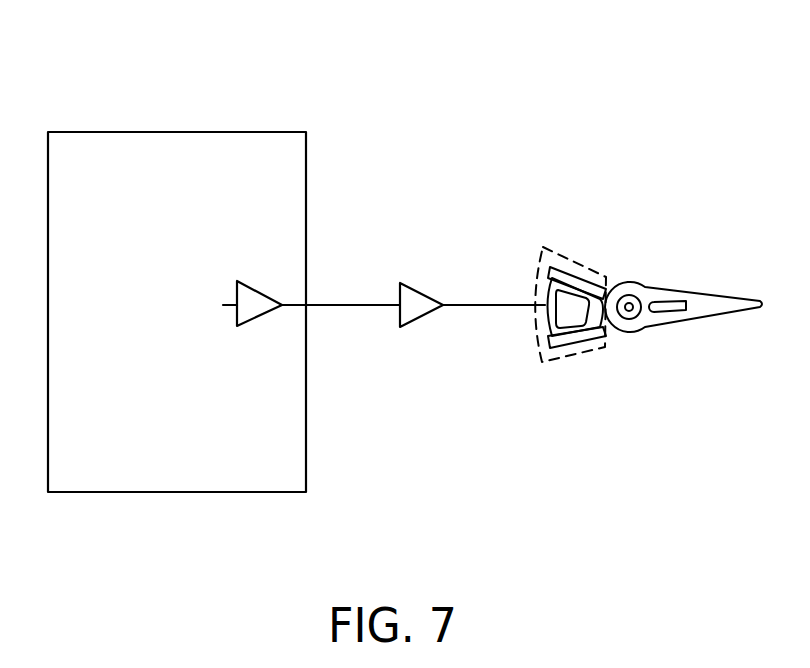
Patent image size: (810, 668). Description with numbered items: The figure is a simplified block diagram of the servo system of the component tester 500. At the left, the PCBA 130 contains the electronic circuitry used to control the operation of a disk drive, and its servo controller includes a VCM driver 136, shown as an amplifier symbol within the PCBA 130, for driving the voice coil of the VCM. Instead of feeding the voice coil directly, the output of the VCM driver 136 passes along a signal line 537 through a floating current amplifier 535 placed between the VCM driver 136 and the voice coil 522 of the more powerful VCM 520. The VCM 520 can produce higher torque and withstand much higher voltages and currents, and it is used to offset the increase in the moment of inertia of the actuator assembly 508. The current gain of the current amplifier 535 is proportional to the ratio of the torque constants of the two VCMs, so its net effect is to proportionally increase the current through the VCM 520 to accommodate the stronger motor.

The component tester 500 is at (457, 80).
The PCBA 130 is at (197, 132).
The VCM driver 136 is at (265, 292).
The current amplifier 535 is at (417, 288).
The signal line 537 is at (473, 306).
The VCM 520 is at (535, 240).
The voice coil 522 is at (550, 288).
The actuator assembly 508 is at (635, 255).